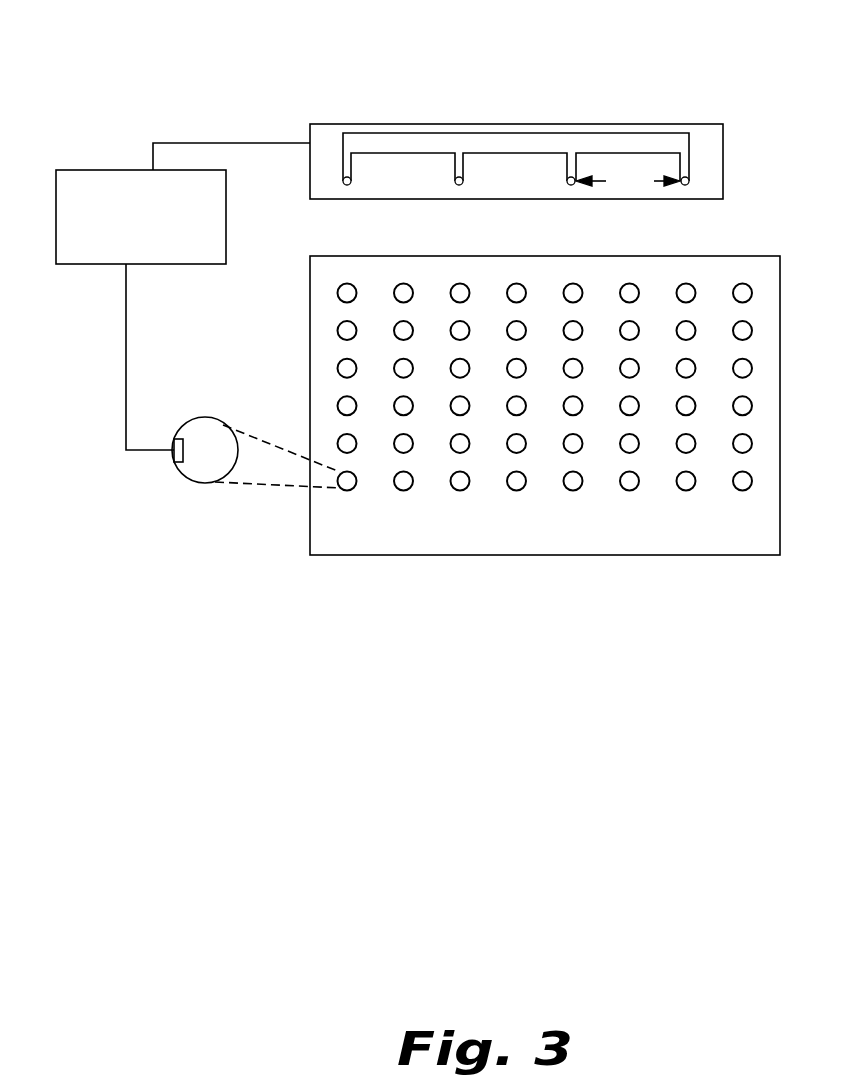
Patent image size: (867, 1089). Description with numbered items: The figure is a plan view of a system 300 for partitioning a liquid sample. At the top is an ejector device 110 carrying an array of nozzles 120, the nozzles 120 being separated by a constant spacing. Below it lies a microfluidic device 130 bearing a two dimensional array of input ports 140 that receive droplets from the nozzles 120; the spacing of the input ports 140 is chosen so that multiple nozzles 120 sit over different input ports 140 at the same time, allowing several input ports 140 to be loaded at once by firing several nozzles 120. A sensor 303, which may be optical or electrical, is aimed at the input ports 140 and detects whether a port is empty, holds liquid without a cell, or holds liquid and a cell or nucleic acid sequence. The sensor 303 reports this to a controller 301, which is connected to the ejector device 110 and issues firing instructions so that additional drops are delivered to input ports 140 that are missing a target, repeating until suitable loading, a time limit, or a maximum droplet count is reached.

The system for partitioning a liquid sample 300 is at (517, 88).
The ejector device 110 is at (497, 192).
The array of nozzles 120 is at (628, 181).
The microfluidic device 130 is at (525, 548).
The input ports 140 is at (638, 496).
The controller 301 is at (120, 242).
The sensor 303 is at (177, 467).